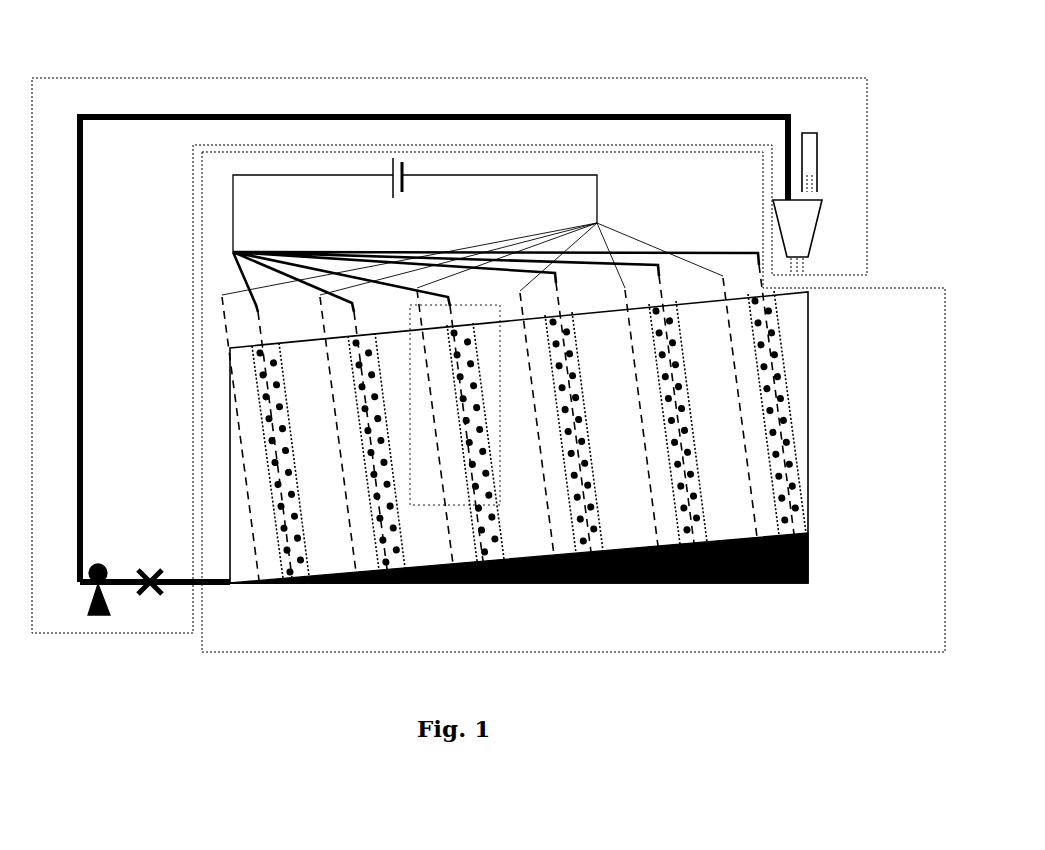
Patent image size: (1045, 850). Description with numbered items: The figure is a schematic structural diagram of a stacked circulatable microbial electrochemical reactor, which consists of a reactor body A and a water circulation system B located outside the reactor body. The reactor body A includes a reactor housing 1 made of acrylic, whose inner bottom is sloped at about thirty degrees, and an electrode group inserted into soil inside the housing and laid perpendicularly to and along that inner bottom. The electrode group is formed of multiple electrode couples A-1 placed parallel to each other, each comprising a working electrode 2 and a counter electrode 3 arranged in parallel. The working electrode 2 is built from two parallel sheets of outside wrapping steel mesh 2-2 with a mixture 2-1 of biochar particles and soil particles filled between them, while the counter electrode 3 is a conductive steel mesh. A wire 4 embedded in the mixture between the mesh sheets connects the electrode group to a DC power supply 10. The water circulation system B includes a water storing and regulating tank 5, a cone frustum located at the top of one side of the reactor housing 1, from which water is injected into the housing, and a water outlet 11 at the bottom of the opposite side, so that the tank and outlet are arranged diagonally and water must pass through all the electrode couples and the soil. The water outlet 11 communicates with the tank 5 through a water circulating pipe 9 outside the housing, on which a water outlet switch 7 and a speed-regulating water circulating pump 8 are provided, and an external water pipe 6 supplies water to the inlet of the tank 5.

The reactor housing 1 is at (810, 335).
The working electrode 2 is at (588, 434).
The mixture of biochar particles and soil particles 2-1 is at (787, 408).
The outside wrapping steel mesh 2-2 is at (797, 440).
The counter electrode 3 is at (317, 317).
The wire 4 is at (793, 480).
The water storing and regulating tank 5 is at (808, 223).
The external water pipe 6 is at (807, 155).
The water outlet switch 7 is at (152, 560).
The speed-regulating water circulating pump 8 is at (100, 563).
The water circulating pipe 9 is at (85, 338).
The DC power supply 10 is at (405, 172).
The water outlet 11 is at (232, 587).
The reactor body A is at (892, 327).
The electrode couple A-1 is at (427, 390).
The water circulation system B is at (402, 93).